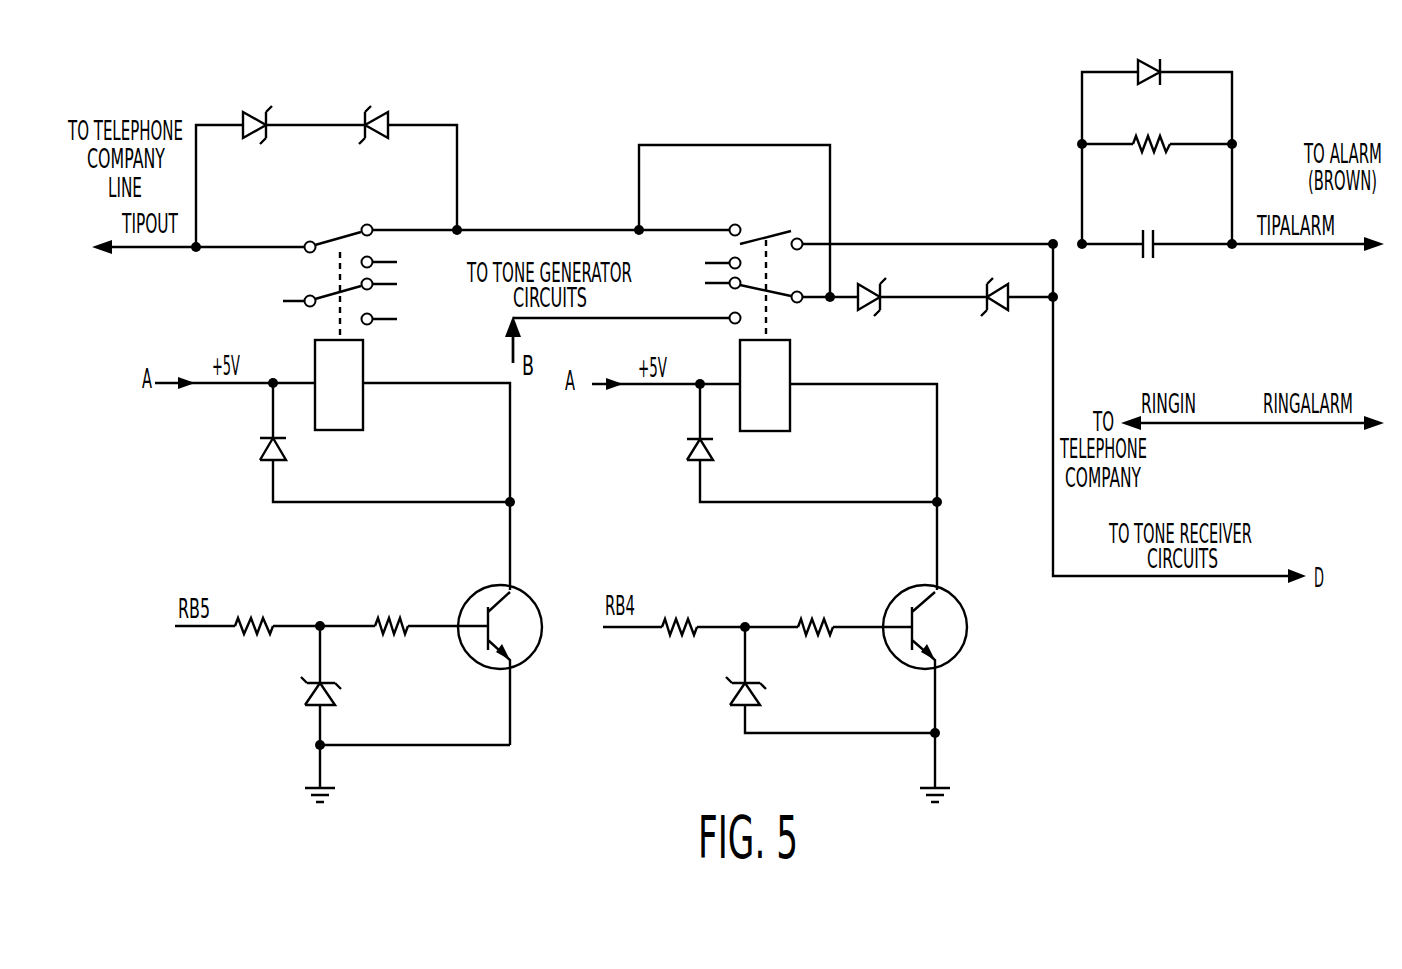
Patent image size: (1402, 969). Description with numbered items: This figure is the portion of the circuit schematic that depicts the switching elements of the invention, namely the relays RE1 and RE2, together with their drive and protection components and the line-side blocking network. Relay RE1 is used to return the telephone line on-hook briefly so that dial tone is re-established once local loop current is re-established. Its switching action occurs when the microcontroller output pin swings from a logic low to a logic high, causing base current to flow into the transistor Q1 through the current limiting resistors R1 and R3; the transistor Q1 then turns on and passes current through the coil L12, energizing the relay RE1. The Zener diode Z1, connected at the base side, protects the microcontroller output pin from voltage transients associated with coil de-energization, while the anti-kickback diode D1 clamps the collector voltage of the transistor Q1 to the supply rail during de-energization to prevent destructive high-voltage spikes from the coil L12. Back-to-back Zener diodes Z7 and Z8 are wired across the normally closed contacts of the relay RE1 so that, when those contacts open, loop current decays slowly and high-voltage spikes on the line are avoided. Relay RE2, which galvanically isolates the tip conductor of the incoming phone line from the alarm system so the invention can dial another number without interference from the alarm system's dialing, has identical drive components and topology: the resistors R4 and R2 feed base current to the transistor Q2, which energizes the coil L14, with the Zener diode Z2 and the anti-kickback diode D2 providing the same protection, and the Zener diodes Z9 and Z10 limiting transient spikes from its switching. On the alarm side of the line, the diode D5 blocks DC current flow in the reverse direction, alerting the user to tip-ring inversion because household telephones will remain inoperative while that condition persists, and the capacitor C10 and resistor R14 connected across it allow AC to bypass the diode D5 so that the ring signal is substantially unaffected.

The Zener diode Z7 is at (252, 124).
The Zener diode Z8 is at (372, 124).
The relay RE1 is at (370, 286).
The coil L12 is at (342, 430).
The anti-kickback diode D1 is at (350, 442).
The current limiting resistor R3 is at (254, 594).
The current limiting resistor R1 is at (393, 594).
The transistor Q1 is at (524, 665).
The Zener diode Z1 is at (405, 714).
The relay RE2 is at (851, 281).
The coil L14 is at (768, 431).
The anti-kickback diode D2 is at (777, 443).
The current limiting resistor R4 is at (680, 595).
The current limiting resistor R2 is at (817, 595).
The transistor Q2 is at (958, 659).
The Zener diode Z2 is at (838, 714).
The Zener diode Z9 is at (869, 299).
The Zener diode Z10 is at (995, 299).
The blocking diode D5 is at (1149, 42).
The resistor R14 is at (1151, 143).
The capacitor C10 is at (1148, 247).